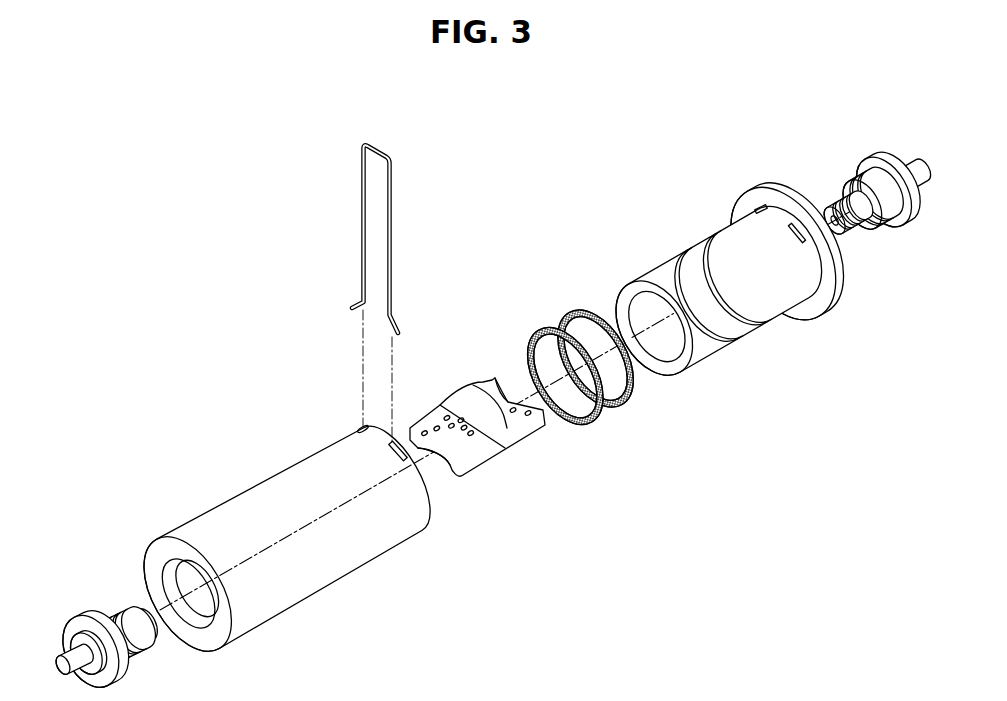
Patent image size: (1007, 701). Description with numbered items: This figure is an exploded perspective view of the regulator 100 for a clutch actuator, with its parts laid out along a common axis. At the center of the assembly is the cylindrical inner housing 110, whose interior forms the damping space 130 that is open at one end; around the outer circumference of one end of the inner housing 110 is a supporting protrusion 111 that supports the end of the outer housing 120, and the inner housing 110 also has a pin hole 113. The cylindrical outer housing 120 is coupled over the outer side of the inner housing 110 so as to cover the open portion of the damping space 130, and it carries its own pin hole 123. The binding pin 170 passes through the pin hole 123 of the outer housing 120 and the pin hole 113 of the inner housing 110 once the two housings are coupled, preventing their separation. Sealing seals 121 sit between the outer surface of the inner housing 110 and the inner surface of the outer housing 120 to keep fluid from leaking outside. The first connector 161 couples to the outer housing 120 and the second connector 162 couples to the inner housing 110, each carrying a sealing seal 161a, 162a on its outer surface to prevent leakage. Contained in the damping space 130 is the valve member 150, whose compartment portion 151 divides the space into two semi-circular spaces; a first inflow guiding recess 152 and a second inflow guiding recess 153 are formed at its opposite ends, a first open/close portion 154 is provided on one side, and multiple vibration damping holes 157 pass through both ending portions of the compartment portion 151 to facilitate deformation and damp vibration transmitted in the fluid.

The regulator 100 is at (559, 138).
The inner housing 110 is at (763, 315).
The supporting protrusion 111 is at (800, 203).
The pin hole 113 is at (763, 207).
The outer housing 120 is at (323, 577).
The sealing seals 121 is at (590, 313).
The pin hole 123 is at (365, 428).
The damping space 130 is at (662, 343).
The valve member 150 is at (491, 444).
The compartment portion 151 is at (500, 443).
The first inflow guiding recess 152 is at (445, 467).
The second inflow guiding recess 153 is at (510, 397).
The first open/close portion 154 is at (472, 395).
The vibration damping holes 157 is at (440, 418).
The first connector 161 is at (90, 617).
The sealing seal 161a is at (138, 607).
The second connector 162 is at (890, 162).
The sealing seal 162a is at (858, 227).
The binding pin 170 is at (377, 152).